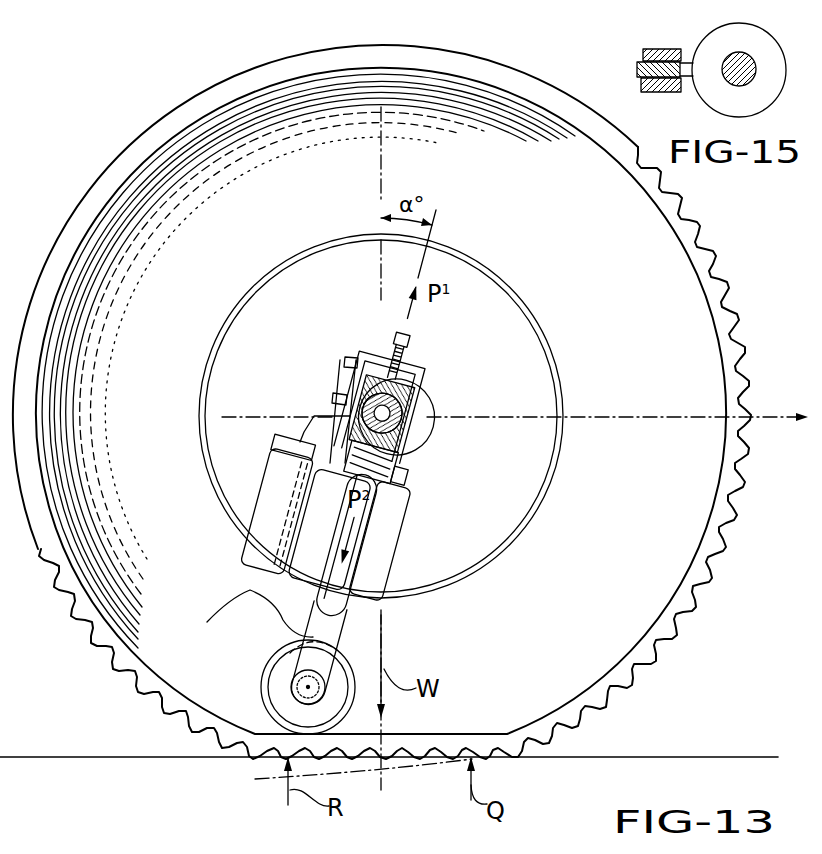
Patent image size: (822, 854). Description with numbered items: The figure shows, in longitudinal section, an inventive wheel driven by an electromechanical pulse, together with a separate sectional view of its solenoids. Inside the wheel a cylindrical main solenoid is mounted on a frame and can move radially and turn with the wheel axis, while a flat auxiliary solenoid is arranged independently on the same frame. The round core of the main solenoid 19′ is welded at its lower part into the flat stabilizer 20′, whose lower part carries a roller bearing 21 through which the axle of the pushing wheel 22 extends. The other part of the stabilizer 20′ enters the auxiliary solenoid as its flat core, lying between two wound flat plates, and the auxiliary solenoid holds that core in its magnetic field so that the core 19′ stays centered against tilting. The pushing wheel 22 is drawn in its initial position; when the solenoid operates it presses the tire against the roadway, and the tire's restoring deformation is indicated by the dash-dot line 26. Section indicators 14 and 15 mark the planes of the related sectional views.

In FIG. 13, the flat stabilizer 20′ is at (266, 460).
In FIG. 15, the flat stabilizer 20′ is at (637, 70).
In FIG. 13, the core of the main solenoid 19′ is at (365, 618).
In FIG. 15, the core of the main solenoid 19′ is at (755, 83).
In FIG. 13, the roller bearing 21 is at (313, 653).
In FIG. 13, the pushing wheel 22 is at (268, 673).
In FIG. 13, the dash-dot line 26 is at (387, 768).
In FIG. 13, the section line 14 is at (517, 23).
In FIG. 13, the section line 15 is at (245, 535).